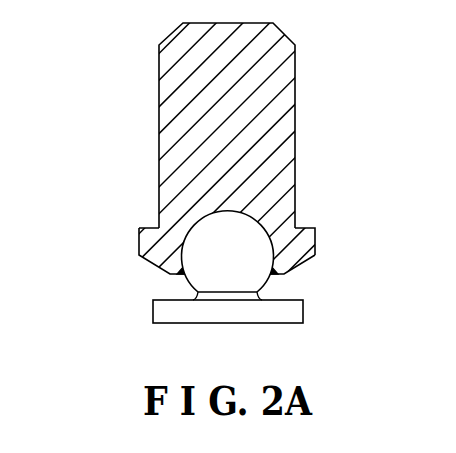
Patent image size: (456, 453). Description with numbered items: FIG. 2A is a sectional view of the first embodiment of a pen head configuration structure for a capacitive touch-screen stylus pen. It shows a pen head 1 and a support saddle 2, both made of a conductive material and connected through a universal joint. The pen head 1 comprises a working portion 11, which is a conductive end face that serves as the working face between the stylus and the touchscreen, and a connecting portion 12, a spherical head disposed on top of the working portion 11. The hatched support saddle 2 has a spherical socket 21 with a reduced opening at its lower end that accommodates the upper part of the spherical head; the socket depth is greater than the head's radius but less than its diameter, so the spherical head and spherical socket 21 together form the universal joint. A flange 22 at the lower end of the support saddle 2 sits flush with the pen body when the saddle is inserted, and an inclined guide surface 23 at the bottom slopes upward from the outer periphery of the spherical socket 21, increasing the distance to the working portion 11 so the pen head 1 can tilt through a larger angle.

The pen head 1 is at (168, 272).
The support saddle 2 is at (228, 155).
The working portion 11 is at (168, 312).
The connecting portion 12 is at (206, 256).
The spherical socket 21 is at (191, 231).
The flange 22 is at (300, 238).
The inclined guide surface 23 is at (292, 264).